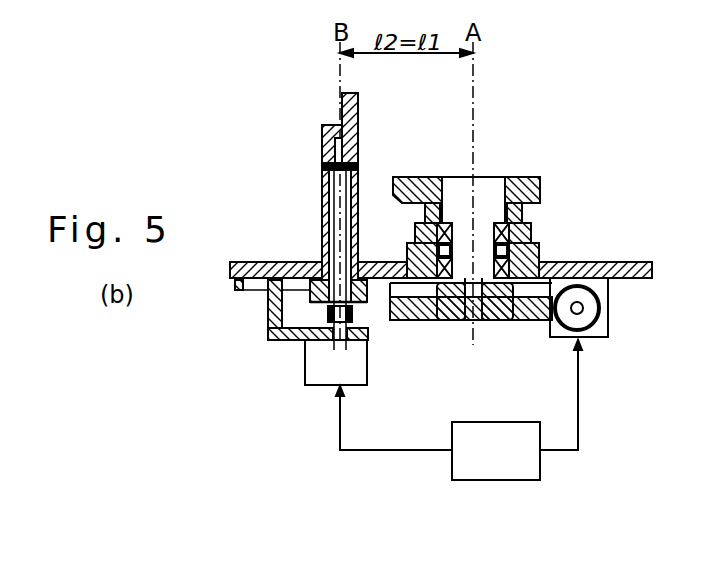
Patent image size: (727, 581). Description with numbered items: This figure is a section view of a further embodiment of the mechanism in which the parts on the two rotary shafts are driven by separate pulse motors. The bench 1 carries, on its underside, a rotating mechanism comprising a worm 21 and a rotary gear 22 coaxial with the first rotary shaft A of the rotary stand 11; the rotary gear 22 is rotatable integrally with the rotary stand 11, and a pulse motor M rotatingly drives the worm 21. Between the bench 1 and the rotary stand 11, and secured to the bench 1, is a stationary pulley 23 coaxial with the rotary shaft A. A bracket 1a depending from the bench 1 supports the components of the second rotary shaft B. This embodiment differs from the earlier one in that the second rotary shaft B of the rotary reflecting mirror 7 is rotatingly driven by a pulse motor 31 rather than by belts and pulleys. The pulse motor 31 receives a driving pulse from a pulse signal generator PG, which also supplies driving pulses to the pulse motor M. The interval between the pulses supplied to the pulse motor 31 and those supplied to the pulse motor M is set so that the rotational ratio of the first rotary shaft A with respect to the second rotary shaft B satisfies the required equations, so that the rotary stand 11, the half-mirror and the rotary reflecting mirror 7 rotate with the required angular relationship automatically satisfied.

The bench 1 is at (253, 262).
The bracket 1a is at (268, 308).
The rotary reflecting mirror 7 is at (342, 110).
The pulse motor 31 is at (312, 372).
The rotary stand 11 is at (533, 190).
The stationary pulley 23 is at (520, 219).
The rotary gear 22 is at (520, 321).
The worm 21 is at (600, 308).
The pulse motor M is at (607, 334).
The pulse signal generator PG is at (467, 428).